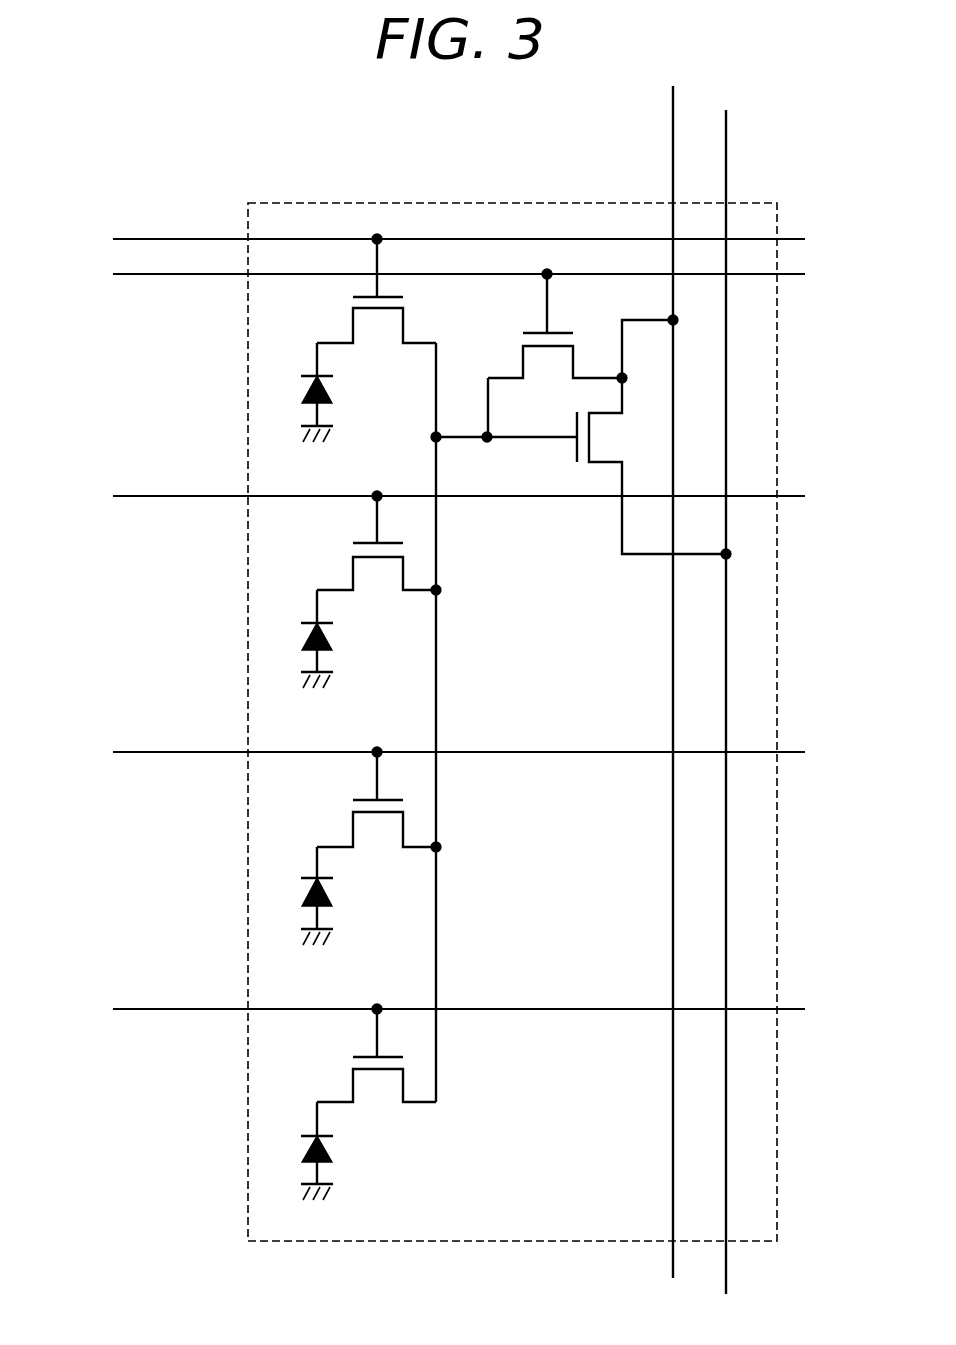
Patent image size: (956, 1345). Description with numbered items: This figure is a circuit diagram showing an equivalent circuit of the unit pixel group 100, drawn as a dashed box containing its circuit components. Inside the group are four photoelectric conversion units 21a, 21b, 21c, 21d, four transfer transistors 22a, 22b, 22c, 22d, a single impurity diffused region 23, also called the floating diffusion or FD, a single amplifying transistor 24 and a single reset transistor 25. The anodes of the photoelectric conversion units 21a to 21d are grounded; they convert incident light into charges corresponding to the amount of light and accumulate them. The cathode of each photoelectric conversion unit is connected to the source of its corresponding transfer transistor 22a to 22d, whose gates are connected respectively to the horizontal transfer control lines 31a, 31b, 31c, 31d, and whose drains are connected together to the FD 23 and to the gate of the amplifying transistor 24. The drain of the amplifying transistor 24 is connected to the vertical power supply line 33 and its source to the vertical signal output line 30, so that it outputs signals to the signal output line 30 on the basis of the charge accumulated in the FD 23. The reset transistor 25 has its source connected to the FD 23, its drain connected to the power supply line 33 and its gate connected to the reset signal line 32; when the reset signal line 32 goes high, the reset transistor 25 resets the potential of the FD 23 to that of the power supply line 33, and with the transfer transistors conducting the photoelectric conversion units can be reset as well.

The unit pixel group 100 is at (487, 202).
The signal output line 30 is at (726, 145).
The power supply line 33 is at (673, 1116).
The transfer control line 31a is at (145, 238).
The transfer control line 31b is at (173, 498).
The transfer control line 31c is at (173, 754).
The transfer control line 31d is at (173, 1011).
The reset signal line 32 is at (174, 276).
The photoelectric conversion unit 21a is at (333, 399).
The photoelectric conversion unit 21b is at (333, 646).
The photoelectric conversion unit 21c is at (333, 902).
The photoelectric conversion unit 21d is at (333, 1158).
The transfer transistor 22a is at (386, 310).
The transfer transistor 22b is at (386, 559).
The transfer transistor 22c is at (386, 814).
The transfer transistor 22d is at (386, 1071).
The impurity diffused region 23 is at (515, 458).
The amplifying transistor 24 is at (600, 465).
The reset transistor 25 is at (522, 363).